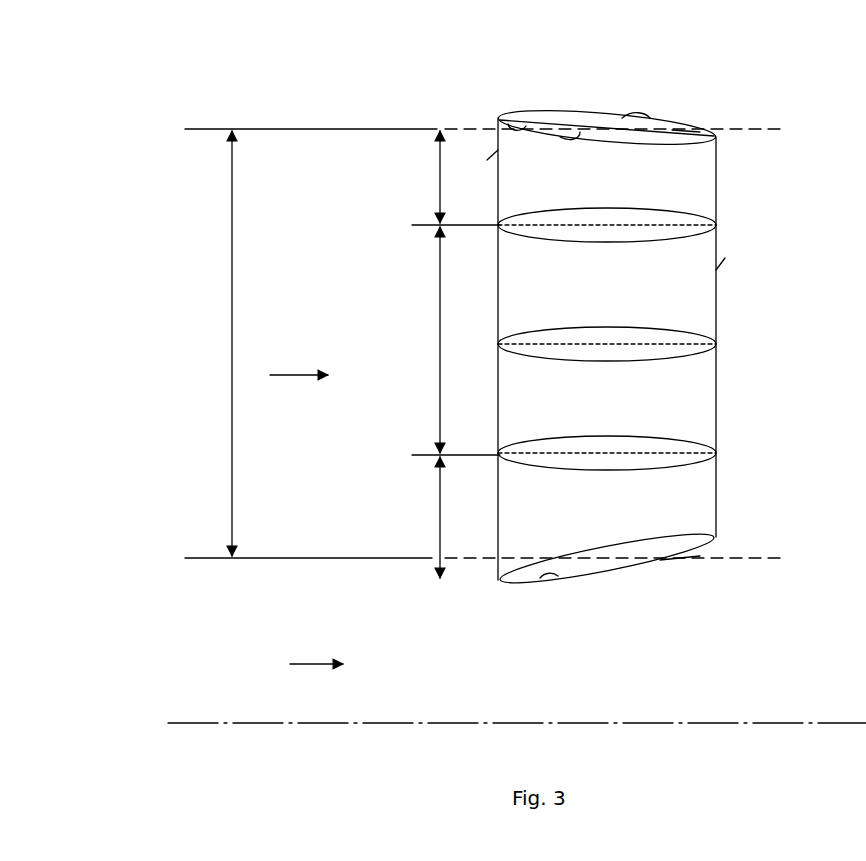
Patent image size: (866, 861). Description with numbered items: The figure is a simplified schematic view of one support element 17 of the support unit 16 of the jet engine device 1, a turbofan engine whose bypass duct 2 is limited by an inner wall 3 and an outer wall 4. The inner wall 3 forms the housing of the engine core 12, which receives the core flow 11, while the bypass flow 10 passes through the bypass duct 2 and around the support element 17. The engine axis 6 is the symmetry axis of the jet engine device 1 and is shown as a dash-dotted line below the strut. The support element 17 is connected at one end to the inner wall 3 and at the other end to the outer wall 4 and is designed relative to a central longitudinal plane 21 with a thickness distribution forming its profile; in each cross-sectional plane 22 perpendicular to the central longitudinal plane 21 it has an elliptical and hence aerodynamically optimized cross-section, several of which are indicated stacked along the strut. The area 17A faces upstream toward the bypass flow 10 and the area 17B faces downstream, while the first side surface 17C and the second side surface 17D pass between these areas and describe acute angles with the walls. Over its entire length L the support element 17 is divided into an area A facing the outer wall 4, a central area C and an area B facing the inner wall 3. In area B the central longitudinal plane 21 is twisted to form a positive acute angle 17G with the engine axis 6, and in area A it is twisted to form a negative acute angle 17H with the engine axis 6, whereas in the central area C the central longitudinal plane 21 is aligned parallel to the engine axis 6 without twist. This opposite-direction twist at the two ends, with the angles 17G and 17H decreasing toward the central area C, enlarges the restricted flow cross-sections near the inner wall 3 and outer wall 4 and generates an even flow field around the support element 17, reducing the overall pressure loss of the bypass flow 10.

The jet engine device 1 is at (154, 114).
The bypass duct 2 is at (828, 243).
The inner wall 3 is at (680, 566).
The outer wall 4 is at (684, 126).
The engine axis 6 is at (743, 128).
The bypass flow 10 is at (300, 374).
The core flow 11 is at (313, 662).
The engine core 12 is at (578, 688).
The support unit 16 is at (768, 155).
The support element 17 is at (598, 104).
The area facing upstream 17A is at (497, 150).
The area facing downstream 17B is at (722, 268).
The first side surface 17C is at (572, 138).
The second side surface 17D is at (635, 118).
The positive acute angle 17G is at (545, 572).
The negative acute angle 17H is at (525, 124).
The central longitudinal plane 21 is at (530, 128).
The cross-sectional plane 22 is at (665, 216).
The length of the support element L is at (232, 375).
The area facing the outer wall A is at (440, 190).
The area facing the inner wall B is at (440, 520).
The central area C is at (440, 350).